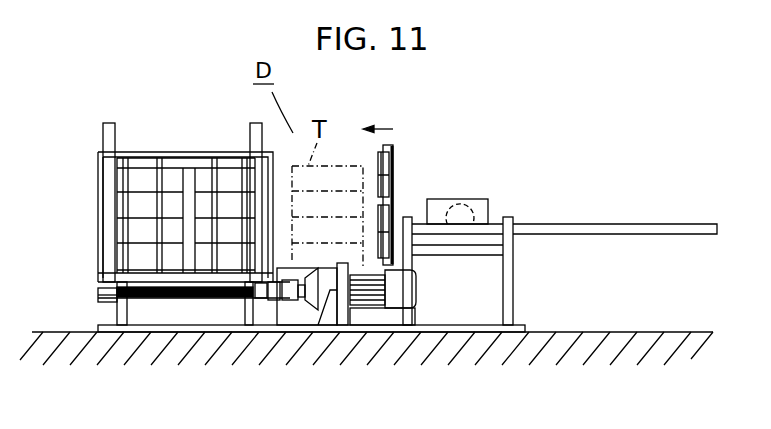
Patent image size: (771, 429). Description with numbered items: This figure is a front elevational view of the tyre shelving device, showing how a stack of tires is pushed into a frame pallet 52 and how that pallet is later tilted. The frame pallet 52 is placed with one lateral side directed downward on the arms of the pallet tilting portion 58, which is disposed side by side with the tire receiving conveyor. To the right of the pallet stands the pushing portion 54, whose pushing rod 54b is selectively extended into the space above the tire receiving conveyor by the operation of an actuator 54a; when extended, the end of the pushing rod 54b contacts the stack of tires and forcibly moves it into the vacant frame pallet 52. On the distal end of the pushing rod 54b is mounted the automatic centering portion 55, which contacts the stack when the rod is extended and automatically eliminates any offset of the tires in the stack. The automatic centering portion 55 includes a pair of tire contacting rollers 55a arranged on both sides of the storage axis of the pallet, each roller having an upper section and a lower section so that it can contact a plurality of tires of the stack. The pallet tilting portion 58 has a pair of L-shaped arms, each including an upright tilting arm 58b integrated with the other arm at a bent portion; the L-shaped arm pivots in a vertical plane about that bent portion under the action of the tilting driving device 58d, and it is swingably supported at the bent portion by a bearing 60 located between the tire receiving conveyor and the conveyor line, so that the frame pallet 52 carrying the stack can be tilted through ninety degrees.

The frame pallet 52 is at (97, 172).
The pushing portion 54 is at (505, 203).
The actuator 54a is at (470, 210).
The pushing rod 54b is at (637, 223).
The automatic centering portion 55 is at (392, 165).
The tire contacting roller 55a is at (386, 218).
The pallet tilting portion 58 is at (92, 280).
The tilting arm 58b is at (108, 123).
The tilting driving device 58d is at (407, 290).
The bearing 60 is at (117, 312).